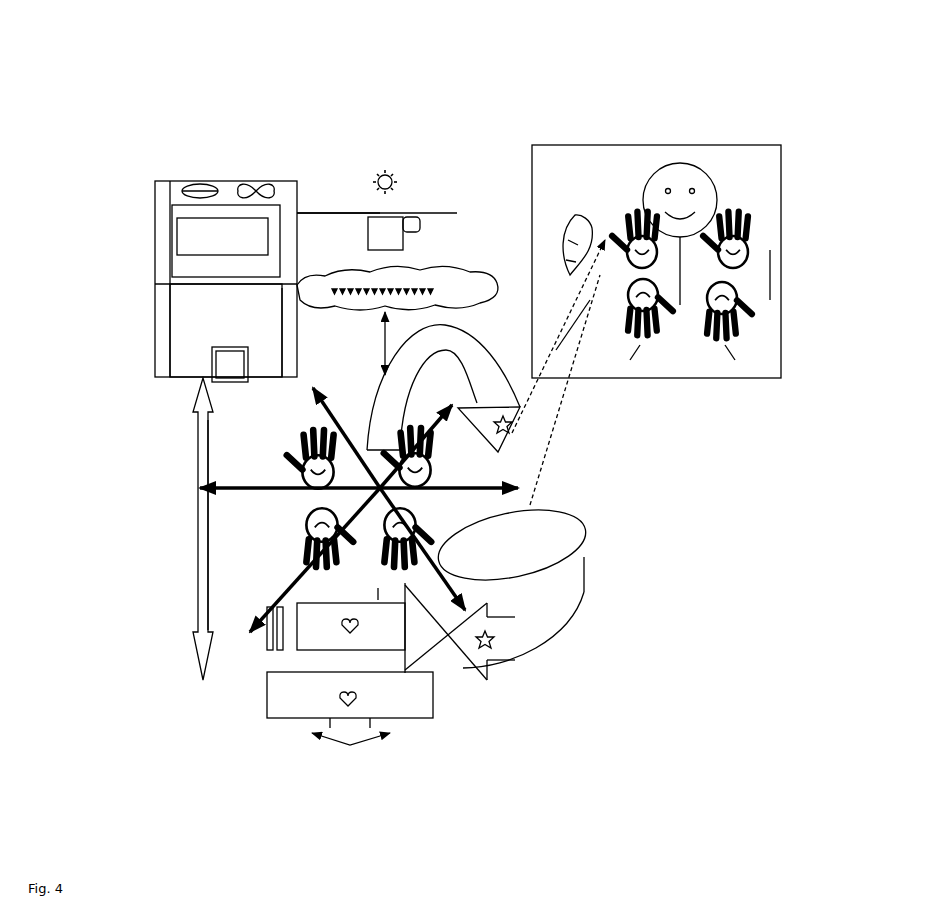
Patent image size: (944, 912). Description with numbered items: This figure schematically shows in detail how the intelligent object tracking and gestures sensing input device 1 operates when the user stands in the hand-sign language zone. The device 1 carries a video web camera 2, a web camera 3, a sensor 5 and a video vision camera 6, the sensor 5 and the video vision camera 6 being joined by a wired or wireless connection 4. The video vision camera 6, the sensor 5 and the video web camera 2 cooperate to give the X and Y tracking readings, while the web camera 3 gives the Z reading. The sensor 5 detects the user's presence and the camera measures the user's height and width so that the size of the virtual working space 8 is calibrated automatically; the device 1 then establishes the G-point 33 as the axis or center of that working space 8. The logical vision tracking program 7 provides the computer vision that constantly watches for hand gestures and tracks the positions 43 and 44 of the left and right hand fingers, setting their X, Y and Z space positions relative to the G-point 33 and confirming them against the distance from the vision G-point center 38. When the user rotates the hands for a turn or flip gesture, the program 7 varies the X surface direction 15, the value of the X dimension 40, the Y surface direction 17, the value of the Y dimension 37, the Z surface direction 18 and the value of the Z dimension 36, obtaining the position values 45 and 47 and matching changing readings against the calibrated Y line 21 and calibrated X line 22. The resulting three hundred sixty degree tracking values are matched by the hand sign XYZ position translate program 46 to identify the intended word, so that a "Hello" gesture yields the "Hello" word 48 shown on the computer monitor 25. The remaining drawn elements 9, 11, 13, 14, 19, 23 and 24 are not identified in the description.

The intelligent object tracking and gestures sensing input device 1 is at (163, 181).
The video web camera 2 is at (200, 181).
The web camera 3 is at (256, 181).
The connection 4 is at (340, 210).
The sensor 5 is at (385, 170).
The video vision camera 6 is at (421, 214).
The logical vision tracking program 7 is at (458, 268).
The virtual working space 8 is at (551, 145).
The feather gesture 9 is at (587, 207).
The user head 11 is at (683, 161).
The user region boundary 13 is at (770, 250).
The sensing line 14 is at (553, 345).
The X surface direction 15 is at (512, 434).
The Y surface direction 17 is at (570, 524).
The Z surface direction 18 is at (414, 695).
The upper panel 19 is at (291, 615).
The calibrated Y line 21 is at (310, 580).
The calibrated X line 22 is at (253, 450).
The icon 23 is at (210, 340).
The lower display area 24 is at (196, 305).
The computer monitor 25 is at (178, 268).
The G-point 33 is at (695, 268).
The value of the Z dimension 36 is at (251, 645).
The value of the Y dimension 37 is at (450, 608).
The vision G-point center 38 is at (378, 590).
The value of the X dimension 40 is at (190, 488).
The left hand finger positions 43 is at (643, 215).
The right hand finger positions 44 is at (732, 235).
The X, Y, Z position values 45 is at (440, 527).
The hand sign 360 degree XYZ position translate program 46 is at (215, 593).
The X, Y, Z position values 47 is at (293, 477).
The "Hello" word 48 is at (172, 236).